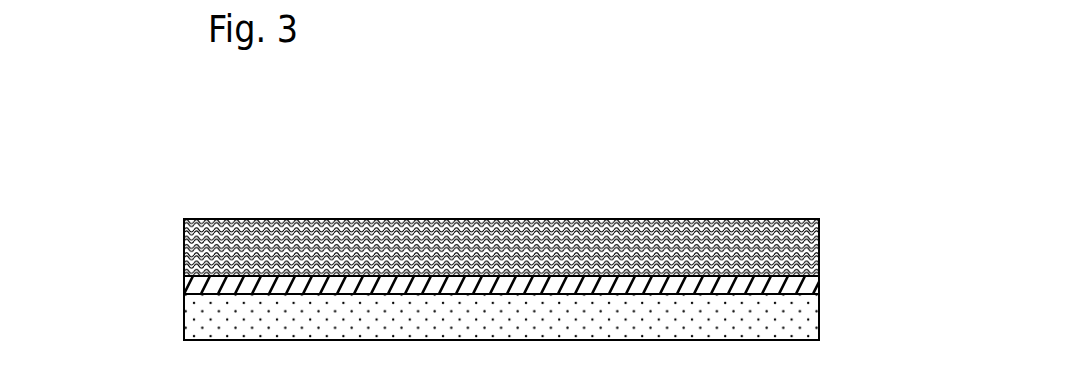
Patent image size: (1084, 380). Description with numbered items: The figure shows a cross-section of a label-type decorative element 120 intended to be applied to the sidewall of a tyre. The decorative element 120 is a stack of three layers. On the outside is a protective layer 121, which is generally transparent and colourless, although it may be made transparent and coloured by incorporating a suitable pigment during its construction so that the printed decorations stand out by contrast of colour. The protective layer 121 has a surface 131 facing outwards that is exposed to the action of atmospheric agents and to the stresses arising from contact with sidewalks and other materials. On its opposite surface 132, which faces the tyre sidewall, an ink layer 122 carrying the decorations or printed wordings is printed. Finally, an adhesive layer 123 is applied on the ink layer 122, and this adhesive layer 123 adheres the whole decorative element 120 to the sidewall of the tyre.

The decorative element 120 is at (748, 165).
The protective layer 121 is at (240, 240).
The ink layer 122 is at (200, 282).
The adhesive layer 123 is at (757, 330).
The surface 131 is at (380, 220).
The surface 132 is at (650, 280).